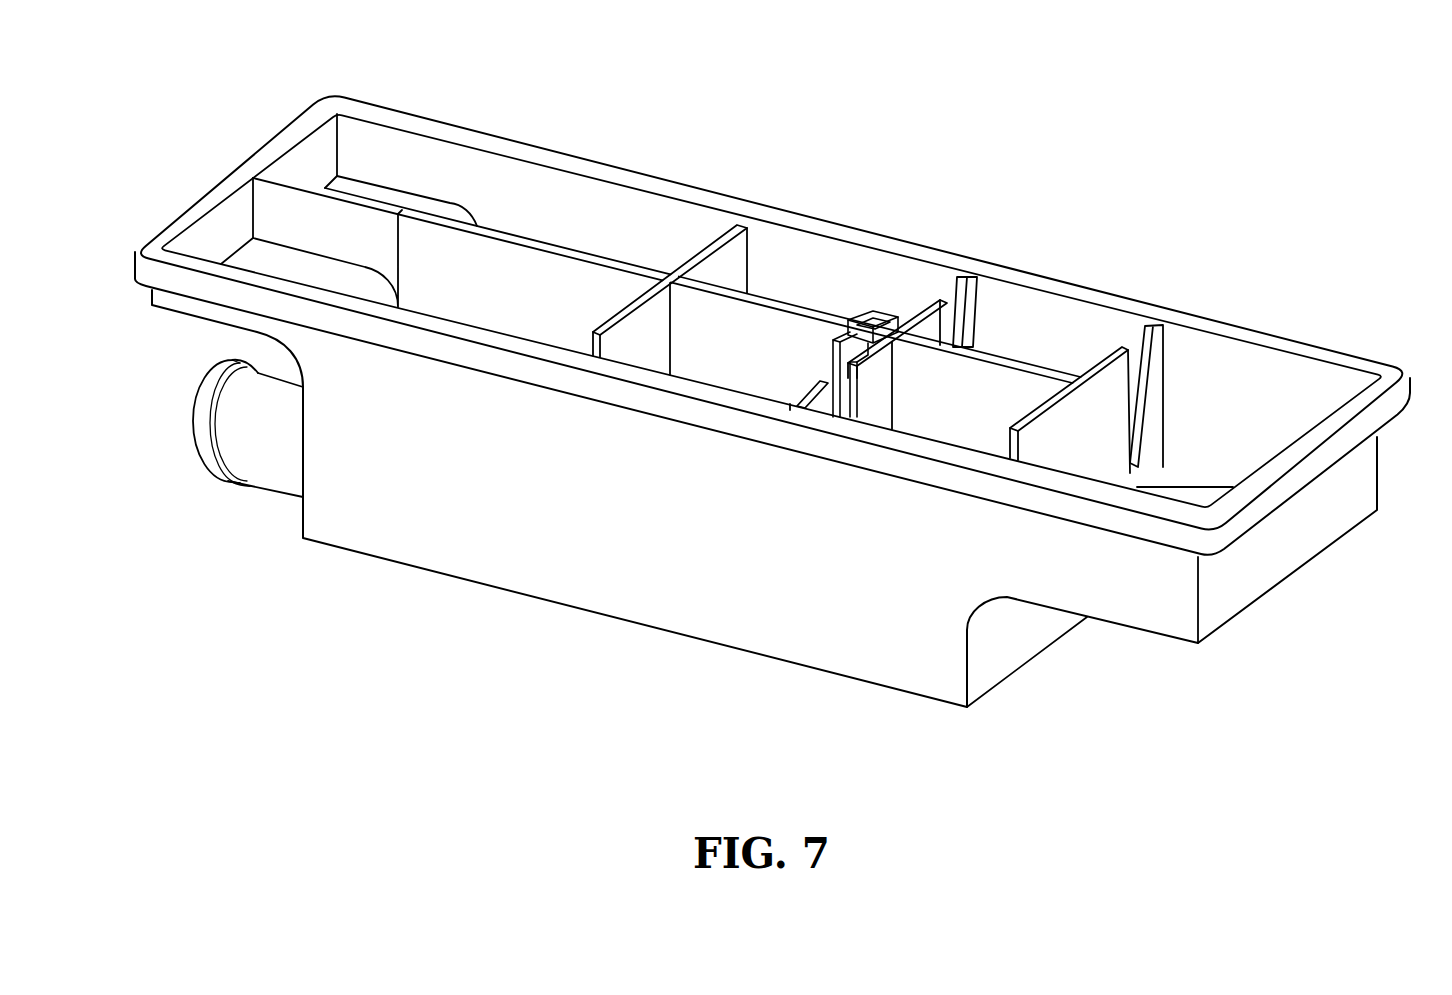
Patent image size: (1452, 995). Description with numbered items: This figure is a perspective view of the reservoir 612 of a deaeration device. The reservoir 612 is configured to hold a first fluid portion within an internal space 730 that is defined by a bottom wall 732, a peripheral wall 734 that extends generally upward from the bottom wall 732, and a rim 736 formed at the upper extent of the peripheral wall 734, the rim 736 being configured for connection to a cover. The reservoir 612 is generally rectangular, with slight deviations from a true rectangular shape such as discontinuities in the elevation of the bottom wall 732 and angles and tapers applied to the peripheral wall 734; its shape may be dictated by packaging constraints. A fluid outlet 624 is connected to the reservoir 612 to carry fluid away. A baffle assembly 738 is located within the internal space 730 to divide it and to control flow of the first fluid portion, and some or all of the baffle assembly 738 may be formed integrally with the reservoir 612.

The reservoir 612 is at (276, 93).
The fluid outlet 624 is at (275, 494).
The internal space 730 is at (1318, 362).
The bottom wall 732 is at (1185, 478).
The peripheral wall 734 is at (1368, 478).
The rim 736 is at (1077, 278).
The baffle assembly 738 is at (777, 282).